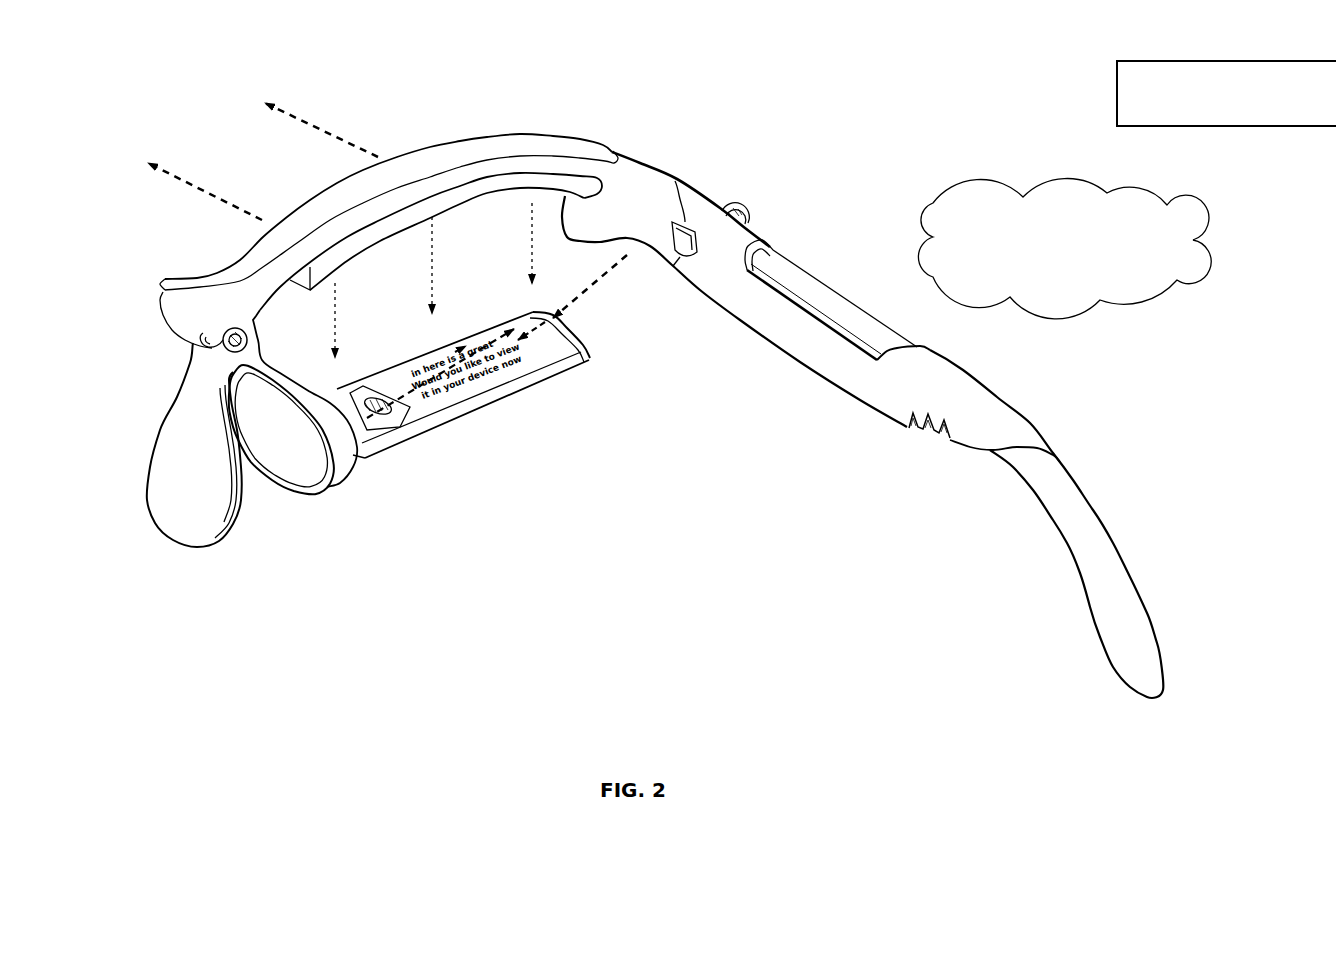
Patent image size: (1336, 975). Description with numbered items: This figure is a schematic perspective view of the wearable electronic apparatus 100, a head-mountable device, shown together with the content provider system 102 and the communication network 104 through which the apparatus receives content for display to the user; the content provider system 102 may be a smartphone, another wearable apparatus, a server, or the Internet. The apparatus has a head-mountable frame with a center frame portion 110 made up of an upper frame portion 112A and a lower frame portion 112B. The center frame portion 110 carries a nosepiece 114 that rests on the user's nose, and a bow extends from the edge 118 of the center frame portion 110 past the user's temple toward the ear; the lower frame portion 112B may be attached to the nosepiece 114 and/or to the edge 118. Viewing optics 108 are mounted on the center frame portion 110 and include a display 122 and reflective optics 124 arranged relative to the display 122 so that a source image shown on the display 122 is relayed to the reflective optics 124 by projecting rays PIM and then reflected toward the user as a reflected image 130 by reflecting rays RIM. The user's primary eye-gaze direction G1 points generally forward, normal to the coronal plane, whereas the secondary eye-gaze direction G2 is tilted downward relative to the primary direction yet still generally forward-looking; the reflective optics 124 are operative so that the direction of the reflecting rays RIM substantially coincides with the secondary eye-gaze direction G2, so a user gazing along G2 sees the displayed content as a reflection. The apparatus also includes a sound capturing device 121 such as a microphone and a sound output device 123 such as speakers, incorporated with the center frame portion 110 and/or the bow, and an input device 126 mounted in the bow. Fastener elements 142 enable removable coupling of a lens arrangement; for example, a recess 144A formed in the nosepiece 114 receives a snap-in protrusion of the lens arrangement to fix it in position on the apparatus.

The wearable electronic apparatus 100 is at (183, 152).
The content provider system 102 is at (1226, 93).
The communication network 104 is at (1064, 249).
The viewing optics 108 is at (604, 308).
The center frame portion 110 is at (302, 198).
The upper frame portion 112A is at (425, 150).
The lower frame portion 112B is at (445, 422).
The nosepiece 114 is at (150, 439).
The edge of center frame portion 118 is at (677, 177).
The sound capturing device 121 is at (1038, 431).
The display 122 is at (513, 190).
The sound output device 123 is at (931, 442).
The reflective optics 124 is at (565, 351).
The input device 126 is at (752, 208).
The reflected image 130 is at (524, 383).
The fastener elements 142 is at (249, 340).
The recess 144A is at (215, 335).
The primary eye-gaze direction G1 is at (178, 190).
The secondary eye-gaze direction G2 is at (590, 286).
The projecting rays PIM is at (430, 303).
The reflecting rays RIM is at (455, 352).